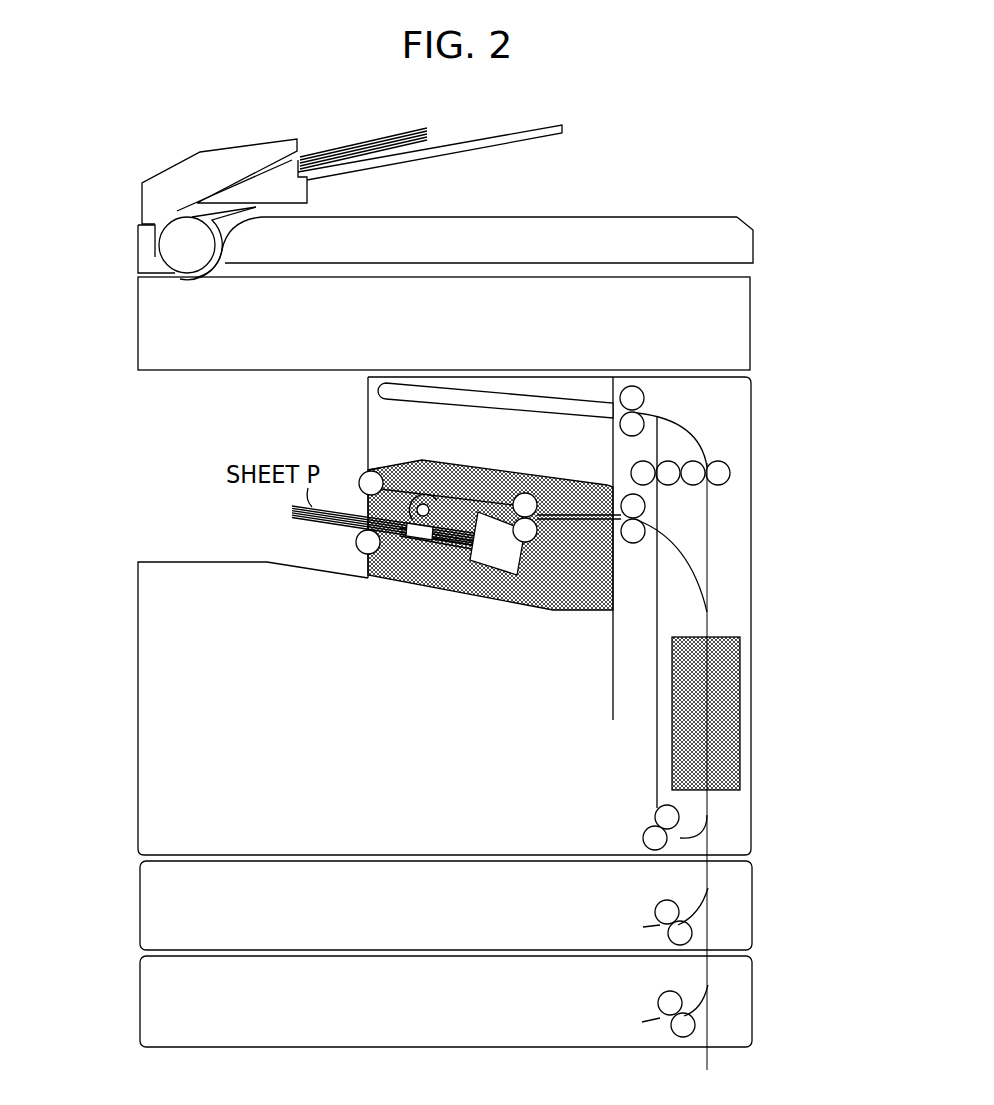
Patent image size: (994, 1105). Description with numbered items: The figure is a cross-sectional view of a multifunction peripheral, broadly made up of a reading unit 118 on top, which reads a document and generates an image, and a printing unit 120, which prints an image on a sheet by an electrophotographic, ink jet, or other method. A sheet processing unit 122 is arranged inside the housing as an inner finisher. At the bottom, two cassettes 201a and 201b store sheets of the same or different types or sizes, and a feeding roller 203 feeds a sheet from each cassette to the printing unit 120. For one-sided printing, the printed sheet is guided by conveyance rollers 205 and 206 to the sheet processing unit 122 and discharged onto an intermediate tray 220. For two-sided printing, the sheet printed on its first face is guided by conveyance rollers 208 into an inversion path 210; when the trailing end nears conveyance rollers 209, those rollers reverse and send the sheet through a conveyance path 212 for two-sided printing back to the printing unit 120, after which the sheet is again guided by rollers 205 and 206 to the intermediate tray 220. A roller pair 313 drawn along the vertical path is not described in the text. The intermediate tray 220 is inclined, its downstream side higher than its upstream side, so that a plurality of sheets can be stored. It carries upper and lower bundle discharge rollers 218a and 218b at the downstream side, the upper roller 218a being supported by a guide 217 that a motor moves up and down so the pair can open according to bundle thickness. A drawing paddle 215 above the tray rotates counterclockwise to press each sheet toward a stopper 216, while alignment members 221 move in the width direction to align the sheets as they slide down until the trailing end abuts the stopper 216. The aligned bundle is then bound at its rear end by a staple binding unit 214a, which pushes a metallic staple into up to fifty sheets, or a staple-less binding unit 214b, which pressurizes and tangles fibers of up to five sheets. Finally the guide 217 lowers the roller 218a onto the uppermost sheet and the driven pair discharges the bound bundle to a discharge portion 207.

The reading unit 118 is at (755, 365).
The printing unit 120 is at (743, 725).
The sheet processing unit 122 is at (410, 592).
The cassette 201a is at (140, 910).
The cassette 201b is at (141, 1006).
The feeding roller 203 is at (652, 905).
The conveyance rollers 205 is at (630, 544).
The conveyance roller 206 is at (527, 543).
The discharge portion 207 is at (208, 562).
The conveyance rollers 208 is at (718, 460).
The conveyance rollers 209 is at (645, 398).
The inversion path 210 is at (436, 383).
The conveyance path for two-sided printing 212 is at (655, 753).
The staple binding unit 214a is at (503, 577).
The staple-less binding unit 214b is at (460, 567).
The drawing paddle 215 is at (447, 493).
The stopper 216 is at (510, 492).
The guide 217 is at (358, 484).
The upper bundle discharge roller 218a is at (366, 452).
The lower bundle discharge roller 218b is at (355, 542).
The intermediate tray 220 is at (377, 580).
The alignment members 221 is at (392, 470).
The registration rollers 313 is at (645, 838).